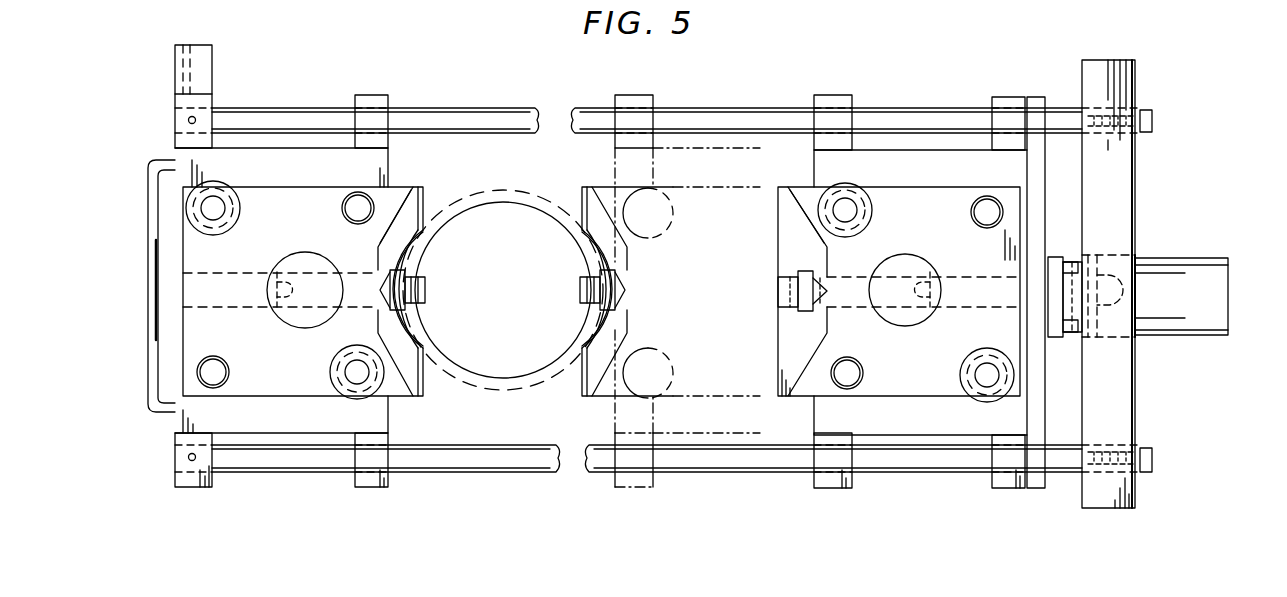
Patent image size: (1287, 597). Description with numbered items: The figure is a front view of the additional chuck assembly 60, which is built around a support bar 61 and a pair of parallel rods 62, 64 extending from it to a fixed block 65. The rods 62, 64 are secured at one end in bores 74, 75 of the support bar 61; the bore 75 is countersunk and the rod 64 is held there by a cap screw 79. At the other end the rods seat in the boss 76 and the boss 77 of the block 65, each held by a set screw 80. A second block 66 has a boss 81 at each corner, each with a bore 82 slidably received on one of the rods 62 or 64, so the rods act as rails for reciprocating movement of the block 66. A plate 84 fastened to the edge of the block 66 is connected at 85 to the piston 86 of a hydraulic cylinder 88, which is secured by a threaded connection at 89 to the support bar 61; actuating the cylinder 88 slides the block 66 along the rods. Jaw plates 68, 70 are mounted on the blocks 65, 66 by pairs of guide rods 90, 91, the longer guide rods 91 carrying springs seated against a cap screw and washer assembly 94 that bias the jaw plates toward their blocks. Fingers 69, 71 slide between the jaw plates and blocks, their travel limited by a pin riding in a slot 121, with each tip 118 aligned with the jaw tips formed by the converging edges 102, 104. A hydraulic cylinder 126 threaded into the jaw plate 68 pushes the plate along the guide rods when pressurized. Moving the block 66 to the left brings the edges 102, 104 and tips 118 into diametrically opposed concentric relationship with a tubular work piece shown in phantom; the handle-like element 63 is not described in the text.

The additional chuck assembly 60 is at (880, 100).
The support bar 61 is at (1125, 80).
The rod 62 is at (742, 113).
The handle 63 is at (148, 228).
The rod 64 is at (510, 470).
The block 65 is at (390, 165).
The block 66 is at (814, 176).
The jaw plate 68 is at (305, 226).
The finger 69 is at (415, 278).
The jaw plate 70 is at (930, 226).
The finger 71 is at (792, 306).
The bore 74 is at (1115, 112).
The bore 75 is at (1125, 445).
The boss 76 is at (176, 133).
The boss 77 is at (212, 483).
The cap screw 79 is at (1153, 462).
The set screw 80 is at (188, 120).
The boss 81 is at (826, 95).
The bore 82 is at (1005, 97).
The plate 84 is at (1037, 100).
The connection 85 is at (1080, 242).
The piston 86 is at (1075, 312).
The hydraulic cylinder 88 is at (1185, 258).
The threaded connection 89 is at (1140, 242).
The guide rod 90 is at (227, 362).
The guide rod 91 is at (338, 364).
The cap screw and washer assembly 94 is at (965, 368).
The converging edge 102 is at (413, 335).
The converging edge 104 is at (420, 246).
The tip 118 is at (427, 290).
The slot 121 is at (942, 285).
The hydraulic cylinder 126 is at (279, 257).